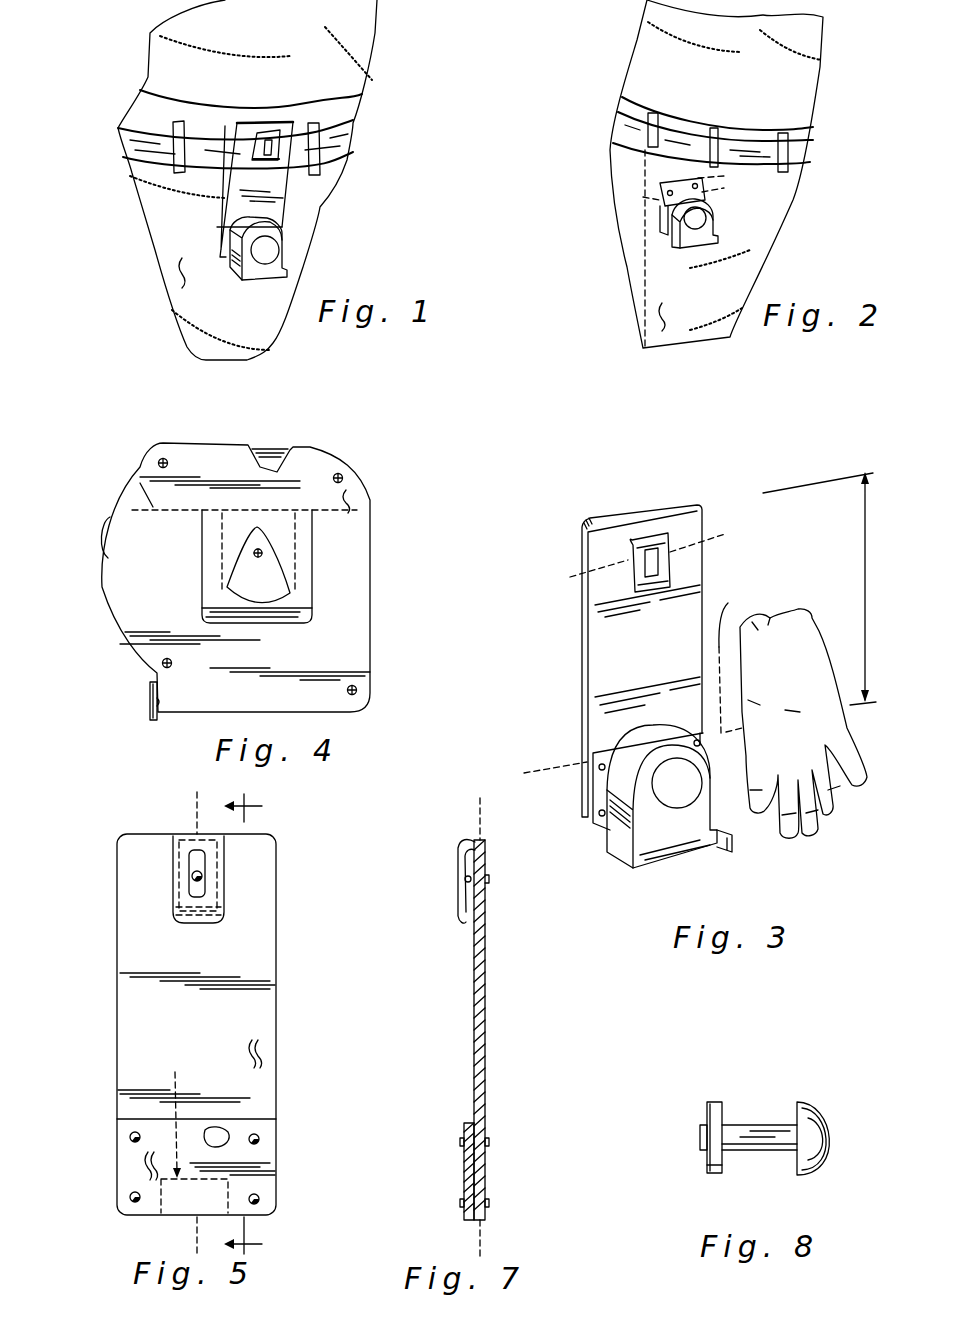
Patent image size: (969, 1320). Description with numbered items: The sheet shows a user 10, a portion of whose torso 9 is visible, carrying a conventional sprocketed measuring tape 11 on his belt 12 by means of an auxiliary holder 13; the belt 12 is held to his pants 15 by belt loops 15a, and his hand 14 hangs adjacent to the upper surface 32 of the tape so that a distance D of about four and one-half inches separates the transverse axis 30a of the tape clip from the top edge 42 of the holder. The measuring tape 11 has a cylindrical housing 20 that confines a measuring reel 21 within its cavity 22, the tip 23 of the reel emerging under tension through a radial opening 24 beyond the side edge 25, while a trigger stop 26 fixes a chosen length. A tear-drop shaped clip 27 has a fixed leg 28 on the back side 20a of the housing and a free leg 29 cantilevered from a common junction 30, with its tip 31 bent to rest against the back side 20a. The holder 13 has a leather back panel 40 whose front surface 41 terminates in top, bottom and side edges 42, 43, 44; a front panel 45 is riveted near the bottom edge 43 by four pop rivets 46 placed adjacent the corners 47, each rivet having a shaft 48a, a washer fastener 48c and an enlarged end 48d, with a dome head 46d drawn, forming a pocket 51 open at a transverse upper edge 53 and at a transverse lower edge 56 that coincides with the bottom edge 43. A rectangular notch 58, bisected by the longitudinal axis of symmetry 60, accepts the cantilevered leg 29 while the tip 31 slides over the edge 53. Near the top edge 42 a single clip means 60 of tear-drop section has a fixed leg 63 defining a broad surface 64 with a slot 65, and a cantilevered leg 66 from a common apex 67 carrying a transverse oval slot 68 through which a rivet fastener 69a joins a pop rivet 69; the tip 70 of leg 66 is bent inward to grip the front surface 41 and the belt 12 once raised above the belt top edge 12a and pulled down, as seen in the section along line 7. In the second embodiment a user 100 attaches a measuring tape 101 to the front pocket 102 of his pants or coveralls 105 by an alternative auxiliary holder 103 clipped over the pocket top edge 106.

In FIG. 1, the torso 9 is at (360, 78).
In FIG. 1, the user 10 is at (383, 25).
In FIG. 1, the measuring tape 11 is at (252, 281).
In FIG. 4, the measuring tape 11 is at (391, 614).
In FIG. 3, the measuring tape 11 is at (678, 862).
In FIG. 1, the belt 12 is at (343, 122).
In FIG. 1, the top edge of belt 12a is at (138, 110).
In FIG. 1, the auxiliary holder 13 is at (223, 211).
In FIG. 3, the auxiliary holder 13 is at (581, 664).
In FIG. 5, the auxiliary holder 13 is at (294, 965).
In FIG. 3, the hand 14 is at (819, 668).
In FIG. 1, the pants 15 is at (178, 275).
In FIG. 1, the belt loops 15a is at (168, 174).
In FIG. 4, the cylindrical housing 20 is at (372, 533).
In FIG. 4, the back side of housing 20a is at (350, 494).
In FIG. 4, the measuring reel 21 is at (148, 694).
In FIG. 4, the cavity 22 is at (263, 460).
In FIG. 4, the tip of measuring reel 23 is at (152, 722).
In FIG. 4, the radial opening 24 is at (159, 701).
In FIG. 4, the side edge 25 is at (127, 640).
In FIG. 4, the trigger stop 26 is at (110, 519).
In FIG. 4, the clip 27 is at (307, 500).
In FIG. 4, the fixed leg 28 is at (223, 554).
In FIG. 4, the free leg 29 is at (315, 575).
In FIG. 4, the common junction 30 is at (233, 503).
In FIG. 4, the transverse axis 30a is at (127, 470).
In FIG. 3, the transverse axis 30a is at (650, 681).
In FIG. 4, the tip of free leg 31 is at (287, 625).
In FIG. 4, the upper surface of tape 32 is at (301, 509).
In FIG. 3, the upper surface of tape 32 is at (629, 748).
In FIG. 3, the back panel 40 is at (588, 519).
In FIG. 5, the back panel 40 is at (117, 1034).
In FIG. 7, the back panel 40 is at (485, 1004).
In FIG. 5, the front surface 41 is at (258, 1054).
In FIG. 3, the top edge 42 is at (637, 519).
In FIG. 5, the top edge 42 is at (139, 834).
In FIG. 5, the bottom edge 43 is at (137, 1215).
In FIG. 7, the bottom edge 43 is at (479, 1222).
In FIG. 5, the side edges 44 is at (119, 980).
In FIG. 3, the front panel 45 is at (710, 753).
In FIG. 5, the front panel 45 is at (137, 1163).
In FIG. 7, the front panel 45 is at (464, 1164).
In FIG. 5, the pop rivets 46 is at (130, 1135).
In FIG. 8, the pop rivets 46 is at (757, 1101).
In FIG. 8, the fastener dome head 46d is at (830, 1127).
In FIG. 5, the corners 47 is at (117, 1117).
In FIG. 8, the shaft 48a is at (750, 1152).
In FIG. 8, the washer fastener 48c is at (707, 1103).
In FIG. 8, the enlarged end 48d is at (700, 1138).
In FIG. 5, the pocket 51 is at (211, 1125).
In FIG. 3, the transverse upper edge 53 is at (690, 732).
In FIG. 5, the transverse upper edge 53 is at (151, 1117).
In FIG. 7, the transverse upper edge 53 is at (470, 1125).
In FIG. 5, the transverse lower edge 56 is at (181, 1215).
In FIG. 7, the transverse lower edge 56 is at (470, 1222).
In FIG. 5, the rectangular notch 58 is at (181, 1066).
In FIG. 5, the clip means 60 is at (195, 806).
In FIG. 7, the clip means 60 is at (483, 821).
In FIG. 1, the fixed leg 63 is at (278, 131).
In FIG. 3, the fixed leg 63 is at (560, 575).
In FIG. 5, the fixed leg 63 is at (173, 875).
In FIG. 7, the fixed leg 63 is at (486, 864).
In FIG. 5, the broad surface 64 is at (191, 893).
In FIG. 5, the slot 65 is at (205, 871).
In FIG. 1, the cantilevered leg 66 is at (258, 133).
In FIG. 3, the cantilevered leg 66 is at (672, 578).
In FIG. 5, the cantilevered leg 66 is at (207, 909).
In FIG. 7, the cantilevered leg 66 is at (462, 881).
In FIG. 5, the common apex 67 is at (266, 834).
In FIG. 7, the common apex 67 is at (468, 838).
In FIG. 5, the transverse oval slot 68 is at (197, 861).
In FIG. 7, the pop rivet 69 is at (486, 883).
In FIG. 5, the rivet fastener 69a is at (201, 882).
In FIG. 1, the tip 70 is at (282, 192).
In FIG. 5, the tip 70 is at (205, 923).
In FIG. 5, the section line 7— 7 is at (231, 1018).
In FIG. 3, the distance D is at (819, 588).
In FIG. 2, the user 100 is at (833, 73).
In FIG. 2, the measuring tape 101 is at (679, 245).
In FIG. 2, the front pocket 102 is at (716, 192).
In FIG. 2, the alternative auxiliary holder 103 is at (658, 218).
In FIG. 2, the pants or coveralls 105 is at (657, 318).
In FIG. 2, the top edge of pocket 106 is at (707, 173).